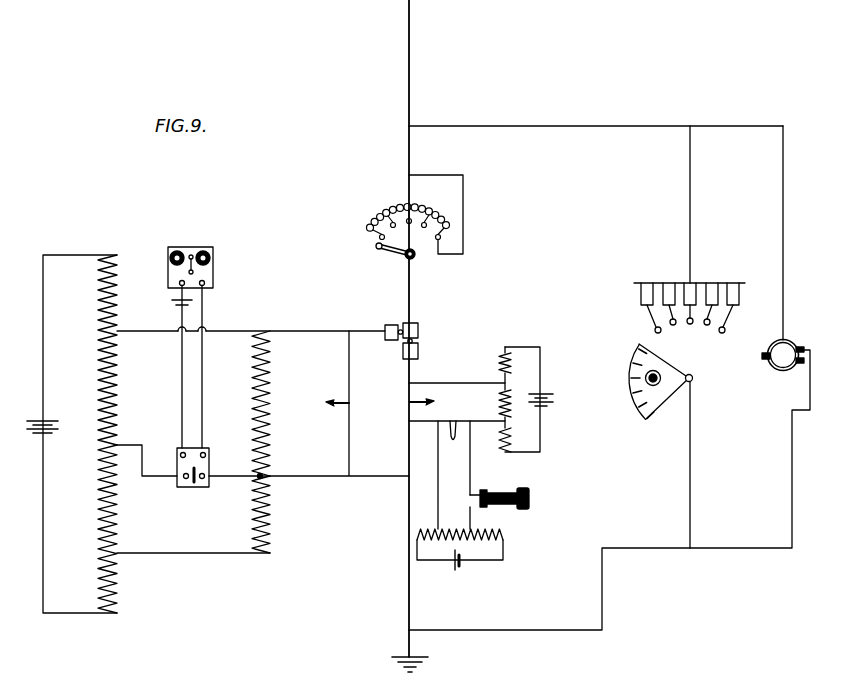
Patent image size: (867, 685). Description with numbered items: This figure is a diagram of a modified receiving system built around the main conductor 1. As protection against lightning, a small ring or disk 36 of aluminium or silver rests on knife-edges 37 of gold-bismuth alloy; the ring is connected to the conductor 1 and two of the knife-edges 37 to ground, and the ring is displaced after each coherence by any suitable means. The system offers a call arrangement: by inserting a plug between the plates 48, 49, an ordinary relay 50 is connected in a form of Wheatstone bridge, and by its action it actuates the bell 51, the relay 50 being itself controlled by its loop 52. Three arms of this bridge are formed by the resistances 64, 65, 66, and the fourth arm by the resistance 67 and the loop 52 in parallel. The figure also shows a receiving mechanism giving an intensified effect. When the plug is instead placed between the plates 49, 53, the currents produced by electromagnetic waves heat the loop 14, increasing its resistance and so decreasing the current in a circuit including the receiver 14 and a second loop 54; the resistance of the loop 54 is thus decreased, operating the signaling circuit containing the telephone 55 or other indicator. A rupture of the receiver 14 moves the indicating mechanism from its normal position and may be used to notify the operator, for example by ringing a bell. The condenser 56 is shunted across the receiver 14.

The conductor 1 is at (409, 63).
The loop receiver 14 is at (435, 400).
The ring or disk 36 is at (787, 367).
The knife-edges 37 is at (762, 356).
The plate 48 is at (384, 320).
The plate 49 is at (420, 325).
The relay 50 is at (207, 471).
The bell 51 is at (213, 270).
The loop 52 is at (328, 393).
The plate 53 is at (418, 352).
The second loop 54 is at (453, 445).
The telephone 55 is at (512, 505).
The condenser 56 is at (697, 284).
The resistance 64 is at (121, 350).
The resistance 65 is at (122, 529).
The resistance 66 is at (277, 514).
The resistance 67 is at (274, 403).